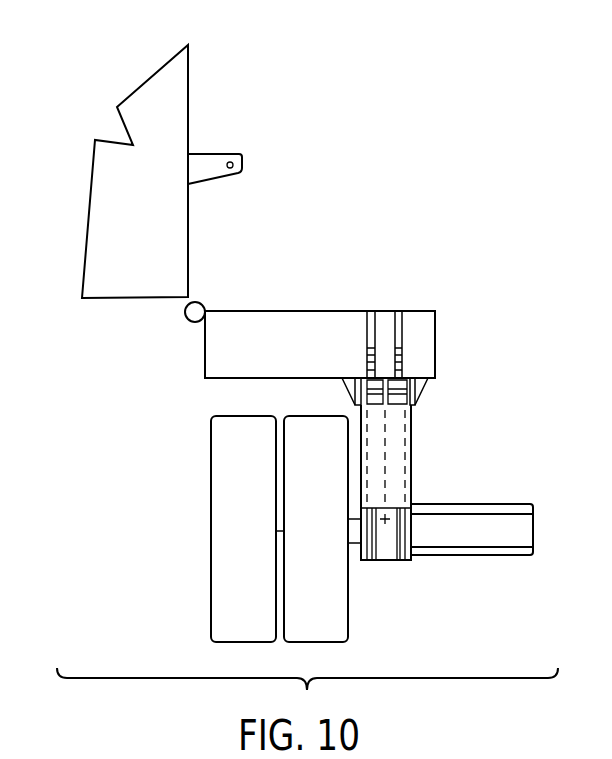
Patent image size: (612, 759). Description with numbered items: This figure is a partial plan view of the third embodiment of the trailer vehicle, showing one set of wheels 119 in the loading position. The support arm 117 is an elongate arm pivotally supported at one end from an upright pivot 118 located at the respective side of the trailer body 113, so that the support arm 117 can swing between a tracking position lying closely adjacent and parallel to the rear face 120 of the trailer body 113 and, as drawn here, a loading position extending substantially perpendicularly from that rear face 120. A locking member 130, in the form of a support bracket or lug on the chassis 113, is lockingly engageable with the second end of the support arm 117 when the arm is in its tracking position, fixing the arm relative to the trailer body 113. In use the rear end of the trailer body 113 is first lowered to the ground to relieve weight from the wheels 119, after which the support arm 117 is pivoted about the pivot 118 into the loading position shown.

The trailer body 113 is at (98, 253).
The rear face 120 is at (188, 124).
The locking member 130 is at (242, 167).
The pivot 118 is at (203, 303).
The support arm 117 is at (362, 310).
The wheels 119 is at (211, 531).